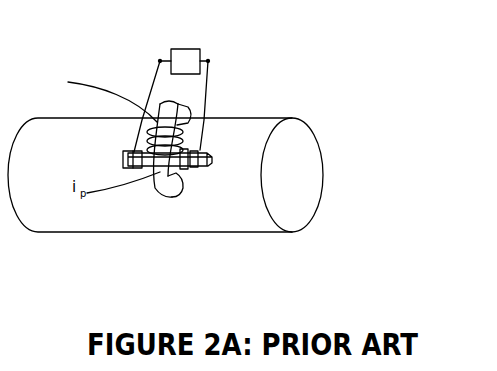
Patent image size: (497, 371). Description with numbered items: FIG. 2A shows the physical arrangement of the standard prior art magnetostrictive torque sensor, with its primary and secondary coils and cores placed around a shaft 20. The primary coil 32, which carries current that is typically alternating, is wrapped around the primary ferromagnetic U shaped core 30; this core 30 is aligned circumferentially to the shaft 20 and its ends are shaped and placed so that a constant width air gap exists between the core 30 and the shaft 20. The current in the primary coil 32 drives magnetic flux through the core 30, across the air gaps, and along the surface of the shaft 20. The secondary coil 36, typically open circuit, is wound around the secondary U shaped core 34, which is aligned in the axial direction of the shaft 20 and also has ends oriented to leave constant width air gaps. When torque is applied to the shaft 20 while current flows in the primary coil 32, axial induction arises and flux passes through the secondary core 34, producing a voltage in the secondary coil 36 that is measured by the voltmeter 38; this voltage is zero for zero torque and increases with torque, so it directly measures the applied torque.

The shaft 20 is at (243, 118).
The primary ferromagnetic U shaped core 30 is at (163, 196).
The primary coil 32 is at (153, 197).
The secondary U shaped core 34 is at (205, 168).
The secondary coil 36 is at (190, 168).
The voltmeter 38 is at (187, 57).